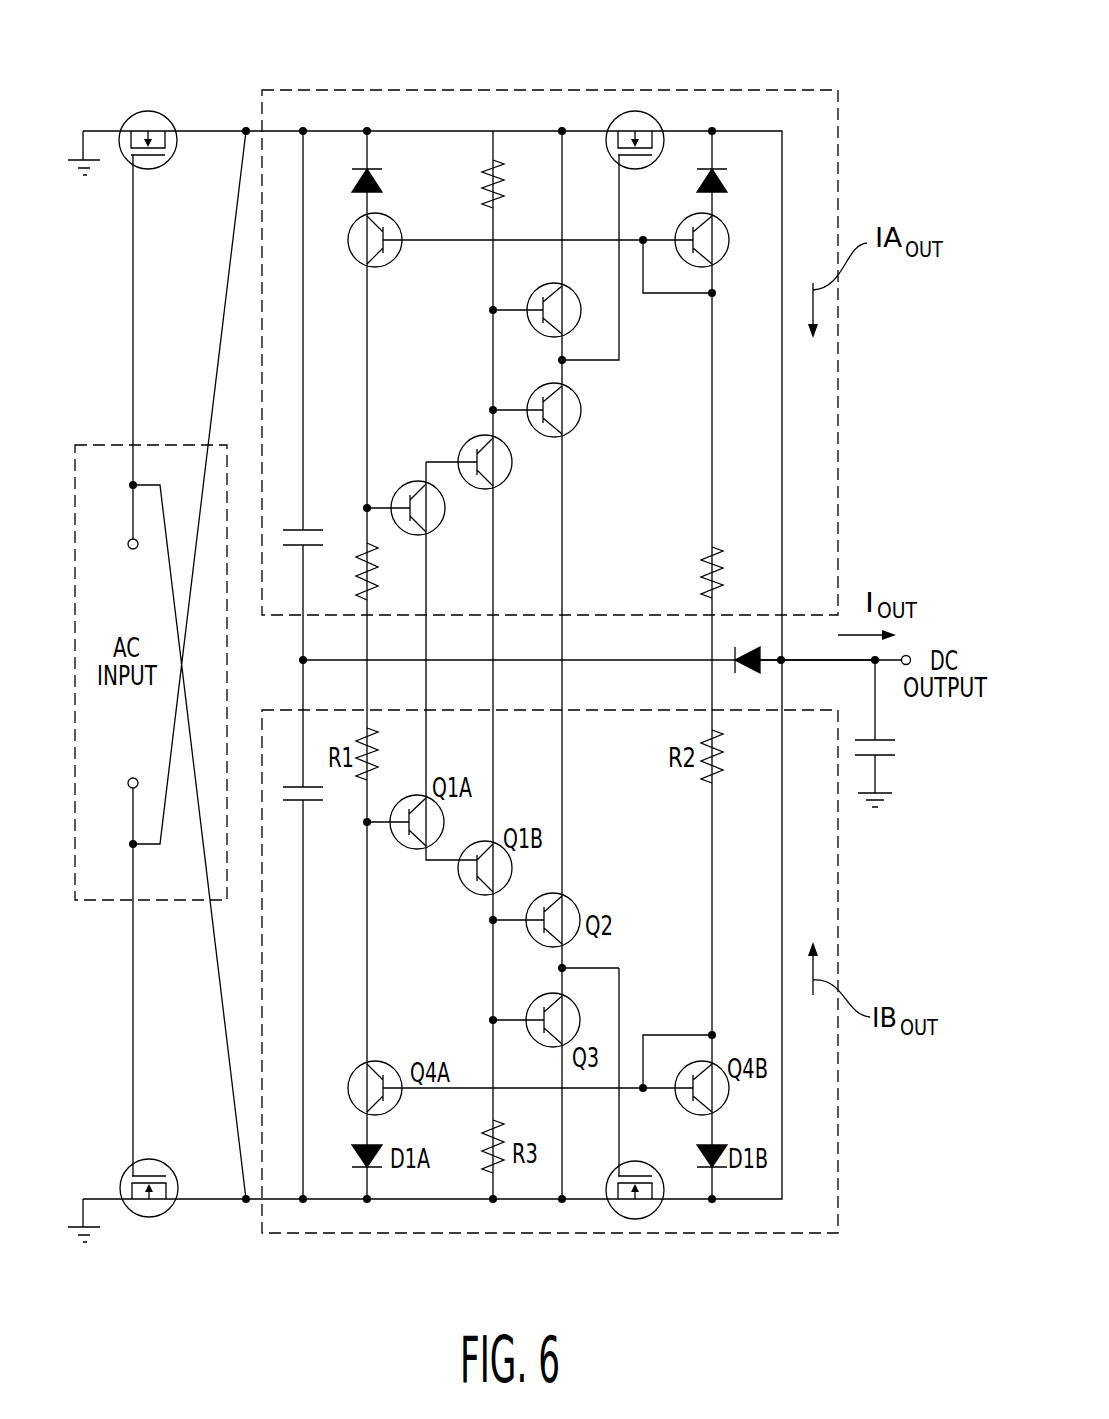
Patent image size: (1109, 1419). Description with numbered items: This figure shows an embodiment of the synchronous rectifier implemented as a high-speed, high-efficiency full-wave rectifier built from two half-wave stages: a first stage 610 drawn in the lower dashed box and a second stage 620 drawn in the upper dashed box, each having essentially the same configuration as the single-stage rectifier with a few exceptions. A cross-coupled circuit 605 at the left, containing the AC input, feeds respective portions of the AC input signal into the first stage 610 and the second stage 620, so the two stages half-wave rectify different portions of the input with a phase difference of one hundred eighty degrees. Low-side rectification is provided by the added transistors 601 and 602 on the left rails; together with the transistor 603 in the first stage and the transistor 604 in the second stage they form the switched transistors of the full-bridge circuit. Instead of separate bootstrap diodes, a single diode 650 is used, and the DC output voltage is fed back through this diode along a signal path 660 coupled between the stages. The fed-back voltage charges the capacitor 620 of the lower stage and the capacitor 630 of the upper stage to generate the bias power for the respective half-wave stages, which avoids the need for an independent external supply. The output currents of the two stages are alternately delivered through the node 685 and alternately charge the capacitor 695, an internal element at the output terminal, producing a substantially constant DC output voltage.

The transistor 601 is at (141, 1216).
The transistor 602 is at (146, 111).
The transistor 603 is at (648, 1215).
The transistor 604 is at (637, 111).
The cross-coupled circuit 605 is at (93, 444).
The first stage 610 is at (839, 1158).
The second stage 620 is at (839, 127).
The capacitor 630 is at (312, 528).
The diode 650 is at (749, 646).
The signal path 660 is at (598, 657).
The node 685 is at (784, 664).
The capacitor 695 is at (890, 757).